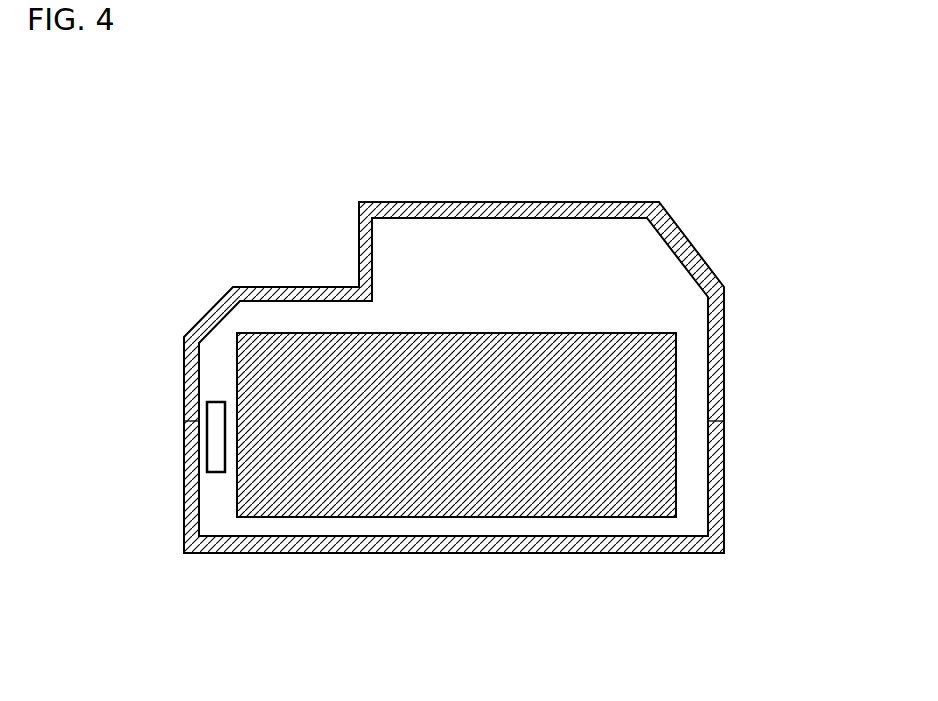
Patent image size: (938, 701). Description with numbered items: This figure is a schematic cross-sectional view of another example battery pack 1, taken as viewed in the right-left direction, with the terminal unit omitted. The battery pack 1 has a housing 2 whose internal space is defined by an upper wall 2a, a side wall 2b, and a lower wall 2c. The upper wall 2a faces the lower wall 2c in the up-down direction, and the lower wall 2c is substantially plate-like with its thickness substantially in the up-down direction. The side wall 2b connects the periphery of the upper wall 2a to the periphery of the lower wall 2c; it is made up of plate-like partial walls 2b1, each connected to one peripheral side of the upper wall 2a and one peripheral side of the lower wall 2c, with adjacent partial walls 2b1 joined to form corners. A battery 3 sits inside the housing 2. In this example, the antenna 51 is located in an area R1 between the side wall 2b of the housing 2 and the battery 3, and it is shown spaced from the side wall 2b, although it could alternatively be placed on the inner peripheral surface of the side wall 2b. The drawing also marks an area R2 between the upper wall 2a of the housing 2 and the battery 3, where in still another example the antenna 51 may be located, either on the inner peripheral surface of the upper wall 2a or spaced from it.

The battery pack 1 is at (599, 76).
The housing 2 is at (605, 210).
The upper wall 2a is at (463, 210).
The side wall 2b is at (185, 407).
The partial wall 2b1 is at (725, 398).
The lower wall 2c is at (465, 553).
The battery 3 is at (595, 497).
The antenna 51 is at (210, 455).
The area R1 is at (210, 368).
The area R2 is at (523, 284).